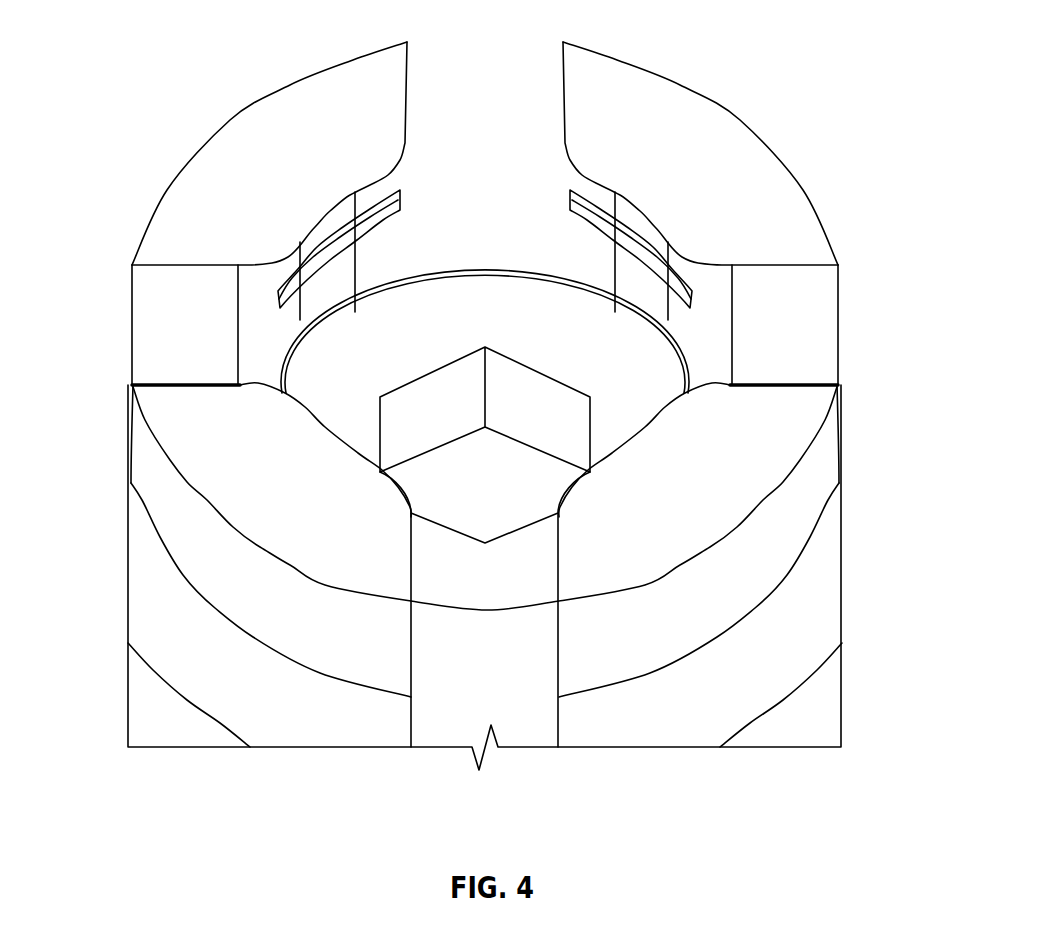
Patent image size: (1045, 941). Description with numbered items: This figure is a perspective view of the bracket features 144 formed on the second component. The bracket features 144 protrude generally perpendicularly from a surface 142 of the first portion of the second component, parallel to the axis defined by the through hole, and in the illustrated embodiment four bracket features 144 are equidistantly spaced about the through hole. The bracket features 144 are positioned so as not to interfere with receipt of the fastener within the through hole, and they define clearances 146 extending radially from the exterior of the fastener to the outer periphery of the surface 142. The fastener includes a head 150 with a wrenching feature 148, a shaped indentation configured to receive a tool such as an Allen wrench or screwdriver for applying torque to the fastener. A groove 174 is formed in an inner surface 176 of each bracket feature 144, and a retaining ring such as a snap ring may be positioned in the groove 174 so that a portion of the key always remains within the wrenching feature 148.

The surface 142 is at (530, 187).
The bracket feature 144 is at (308, 107).
The slot 146 is at (458, 170).
The wrenching feature 148 is at (537, 418).
The head 150 is at (512, 327).
The groove 174 is at (320, 263).
The inner surface 176 is at (333, 290).